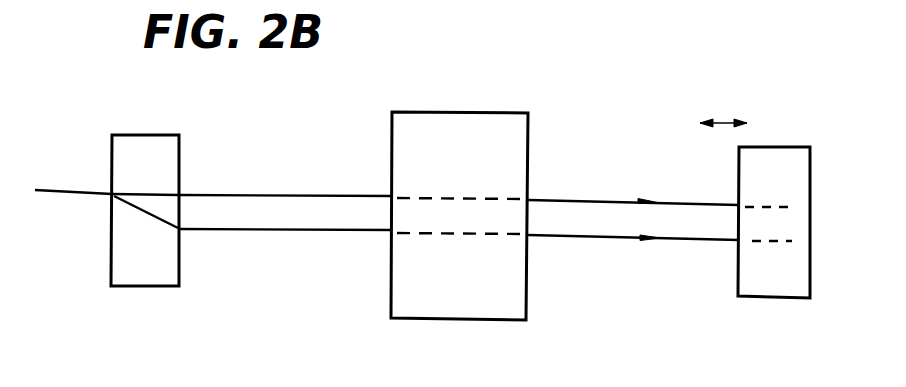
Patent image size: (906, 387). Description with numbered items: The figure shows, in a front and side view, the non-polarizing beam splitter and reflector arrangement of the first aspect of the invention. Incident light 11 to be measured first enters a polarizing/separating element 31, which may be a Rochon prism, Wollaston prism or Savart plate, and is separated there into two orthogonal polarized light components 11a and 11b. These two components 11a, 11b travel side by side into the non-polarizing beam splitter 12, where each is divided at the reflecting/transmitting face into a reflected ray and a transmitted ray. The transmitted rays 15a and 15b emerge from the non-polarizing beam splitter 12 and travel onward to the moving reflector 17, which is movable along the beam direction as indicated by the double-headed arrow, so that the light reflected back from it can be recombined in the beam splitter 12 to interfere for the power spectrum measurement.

The incident light 11 is at (54, 190).
The polarizing/separating element 31 is at (164, 134).
The polarized light component 11a is at (260, 194).
The polarized light component 11b is at (263, 233).
The non-polarizing beam splitter 12 is at (487, 112).
The transmitted ray 15a is at (587, 199).
The transmitted ray 15b is at (589, 239).
The moving reflector 17 is at (790, 298).